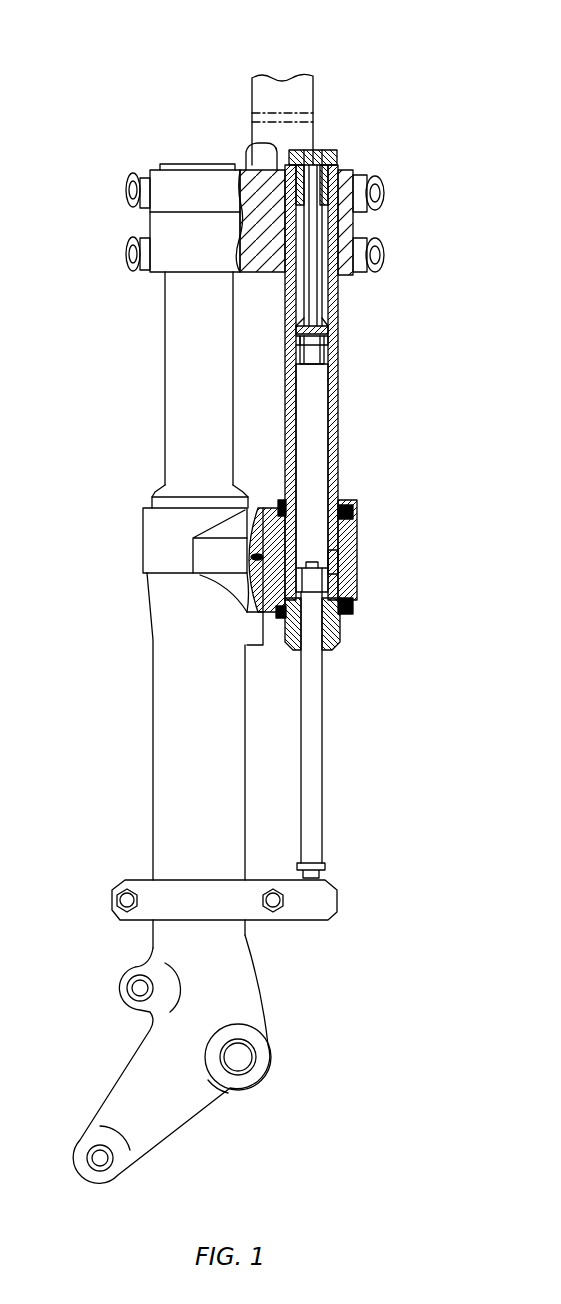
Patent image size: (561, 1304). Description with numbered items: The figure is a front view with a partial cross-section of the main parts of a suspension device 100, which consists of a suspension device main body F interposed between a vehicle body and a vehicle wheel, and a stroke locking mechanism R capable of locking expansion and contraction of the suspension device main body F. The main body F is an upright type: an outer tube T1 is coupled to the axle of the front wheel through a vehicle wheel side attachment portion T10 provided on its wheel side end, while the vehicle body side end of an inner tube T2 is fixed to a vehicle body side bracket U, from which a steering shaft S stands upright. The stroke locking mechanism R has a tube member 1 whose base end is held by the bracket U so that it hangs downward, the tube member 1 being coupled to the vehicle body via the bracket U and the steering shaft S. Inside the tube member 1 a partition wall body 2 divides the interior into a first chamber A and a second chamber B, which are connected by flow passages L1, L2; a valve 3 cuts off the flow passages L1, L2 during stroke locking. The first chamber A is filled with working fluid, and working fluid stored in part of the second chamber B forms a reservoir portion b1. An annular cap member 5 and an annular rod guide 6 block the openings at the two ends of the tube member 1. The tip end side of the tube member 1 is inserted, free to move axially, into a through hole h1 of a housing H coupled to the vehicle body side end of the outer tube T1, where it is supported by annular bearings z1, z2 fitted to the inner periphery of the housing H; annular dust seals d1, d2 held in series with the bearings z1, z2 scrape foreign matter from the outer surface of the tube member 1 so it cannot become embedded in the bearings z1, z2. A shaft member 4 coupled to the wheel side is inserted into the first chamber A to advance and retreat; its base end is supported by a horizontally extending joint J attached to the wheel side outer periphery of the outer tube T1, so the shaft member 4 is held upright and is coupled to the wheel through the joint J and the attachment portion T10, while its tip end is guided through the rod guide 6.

The suspension device 100 is at (262, 603).
The steering shaft S is at (318, 97).
The vehicle body side bracket U is at (175, 188).
The cap member 5 is at (340, 166).
The second chamber B is at (322, 300).
The reservoir portion b1 is at (297, 326).
The tube member 1 is at (338, 322).
The stroke locking mechanism R is at (354, 500).
The valve 3 is at (300, 335).
The partition wall body 2 is at (334, 350).
The flow passage L1 is at (308, 370).
The flow passage L2 is at (345, 407).
The first chamber A is at (315, 474).
The dust seal d1 is at (290, 508).
The bearing z1 is at (354, 520).
The suspension device main body F is at (160, 578).
The housing H is at (386, 564).
The through hole h1 is at (323, 563).
The bearing z2 is at (352, 604).
The dust seal d2 is at (280, 618).
The rod guide 6 is at (338, 648).
The inner tube T2 is at (185, 356).
The outer tube T1 is at (180, 742).
The shaft member 4 is at (315, 772).
The joint J is at (318, 915).
The vehicle wheel side attachment portion T10 is at (260, 1057).